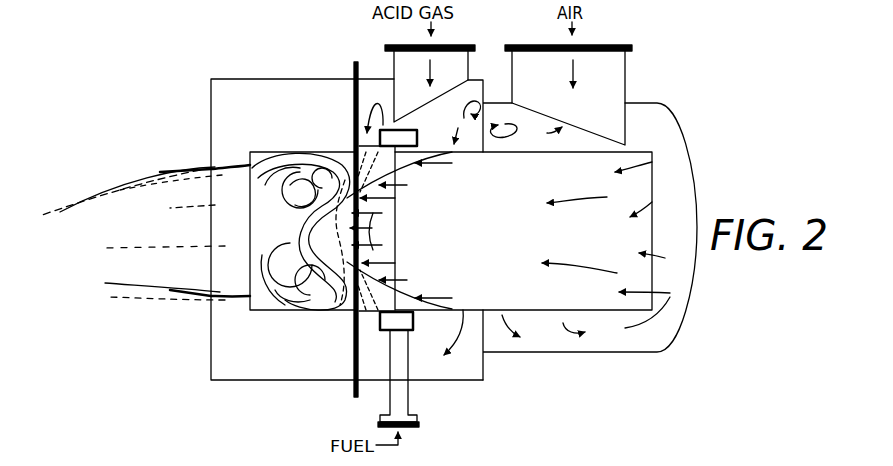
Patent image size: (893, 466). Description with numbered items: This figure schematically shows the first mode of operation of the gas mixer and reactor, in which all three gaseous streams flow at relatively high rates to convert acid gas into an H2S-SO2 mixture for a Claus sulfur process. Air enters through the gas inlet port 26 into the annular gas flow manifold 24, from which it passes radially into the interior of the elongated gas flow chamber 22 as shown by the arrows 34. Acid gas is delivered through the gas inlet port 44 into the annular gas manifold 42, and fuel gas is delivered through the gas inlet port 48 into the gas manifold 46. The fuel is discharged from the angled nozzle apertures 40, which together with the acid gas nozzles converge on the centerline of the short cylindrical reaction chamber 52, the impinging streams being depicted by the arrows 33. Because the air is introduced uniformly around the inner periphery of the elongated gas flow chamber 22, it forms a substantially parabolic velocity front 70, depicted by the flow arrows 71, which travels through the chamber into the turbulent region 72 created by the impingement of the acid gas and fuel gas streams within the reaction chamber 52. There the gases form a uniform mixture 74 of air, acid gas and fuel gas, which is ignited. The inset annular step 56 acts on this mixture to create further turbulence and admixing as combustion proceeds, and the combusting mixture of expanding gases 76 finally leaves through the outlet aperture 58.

The elongated gas flow chamber 22 is at (526, 310).
The annular gas flow manifold 24 is at (550, 139).
The gas inlet port 26 is at (619, 50).
The arrows 33 is at (356, 301).
The arrows 34 is at (650, 163).
The nozzle apertures 40 is at (367, 324).
The annular gas manifold 42 is at (451, 139).
The gas inlet port 44 is at (459, 50).
The gas manifold 46 is at (403, 130).
The gas inlet port 48 is at (417, 425).
The reaction chamber 52 is at (303, 303).
The inset annular step 56 is at (210, 298).
The outlet aperture 58 is at (202, 185).
The parabolic velocity front 70 is at (385, 178).
The flow arrows 71 is at (371, 240).
The turbulent region 72 is at (333, 236).
The uniform mixture 74 is at (302, 178).
The combusting mixture of expanding gases 76 is at (137, 202).